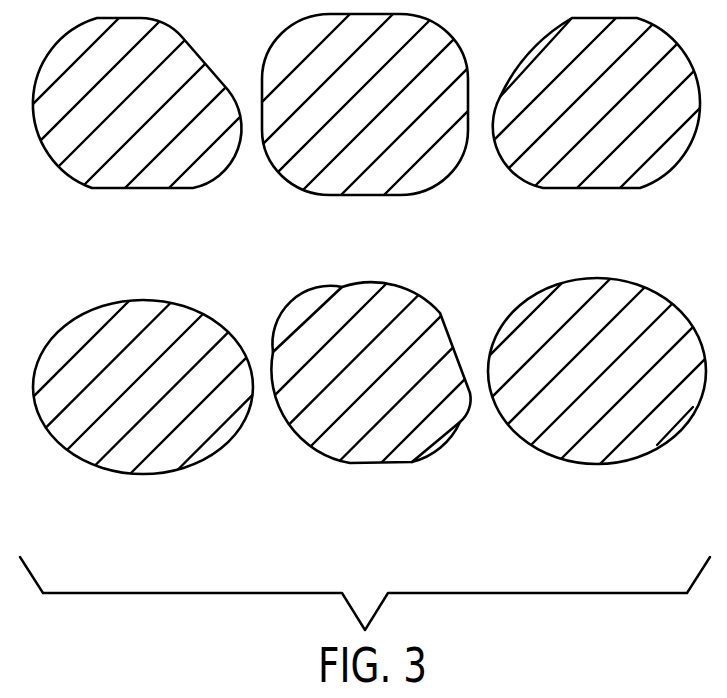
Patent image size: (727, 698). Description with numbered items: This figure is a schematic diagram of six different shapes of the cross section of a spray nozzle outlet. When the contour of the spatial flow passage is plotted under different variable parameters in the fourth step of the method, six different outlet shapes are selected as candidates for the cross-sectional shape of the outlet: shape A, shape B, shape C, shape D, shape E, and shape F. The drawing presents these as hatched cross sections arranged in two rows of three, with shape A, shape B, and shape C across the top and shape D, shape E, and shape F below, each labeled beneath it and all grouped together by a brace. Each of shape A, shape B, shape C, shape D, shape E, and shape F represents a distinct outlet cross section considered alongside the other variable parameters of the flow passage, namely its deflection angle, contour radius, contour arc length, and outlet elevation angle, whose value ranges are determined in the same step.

The shape A is at (178, 349).
The shape B is at (289, 349).
The shape C is at (363, 349).
The shape D is at (324, 349).
The shape E is at (363, 349).
The shape F is at (436, 349).